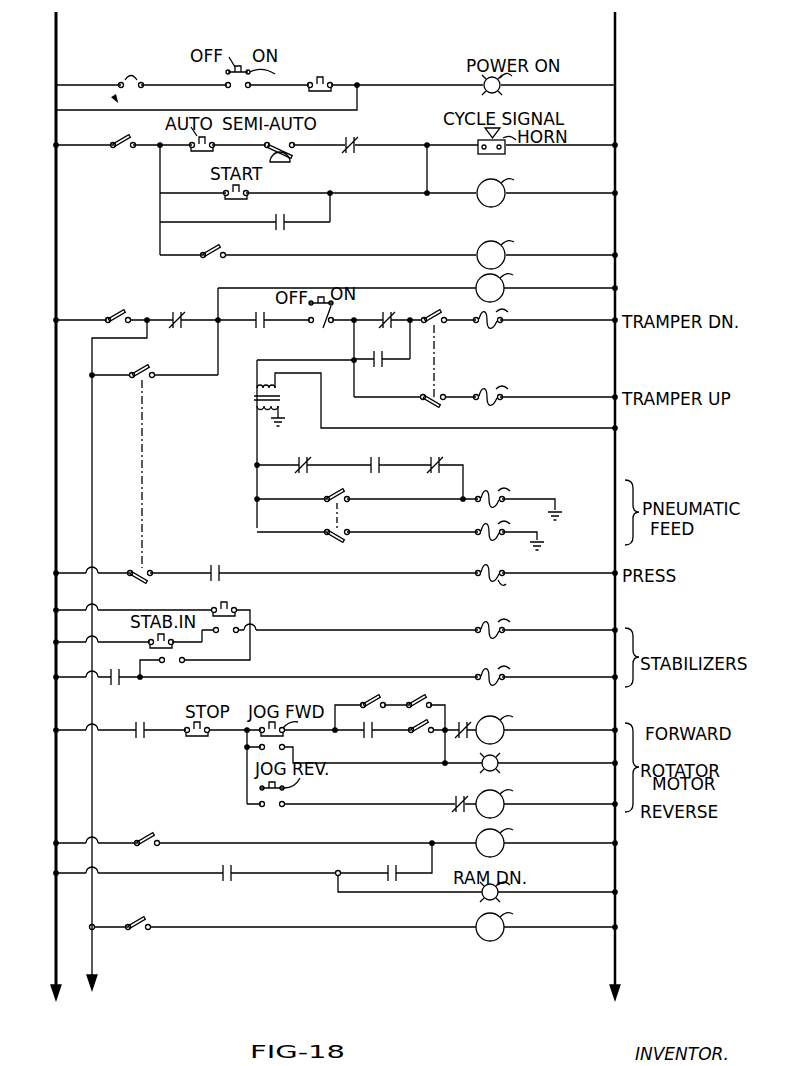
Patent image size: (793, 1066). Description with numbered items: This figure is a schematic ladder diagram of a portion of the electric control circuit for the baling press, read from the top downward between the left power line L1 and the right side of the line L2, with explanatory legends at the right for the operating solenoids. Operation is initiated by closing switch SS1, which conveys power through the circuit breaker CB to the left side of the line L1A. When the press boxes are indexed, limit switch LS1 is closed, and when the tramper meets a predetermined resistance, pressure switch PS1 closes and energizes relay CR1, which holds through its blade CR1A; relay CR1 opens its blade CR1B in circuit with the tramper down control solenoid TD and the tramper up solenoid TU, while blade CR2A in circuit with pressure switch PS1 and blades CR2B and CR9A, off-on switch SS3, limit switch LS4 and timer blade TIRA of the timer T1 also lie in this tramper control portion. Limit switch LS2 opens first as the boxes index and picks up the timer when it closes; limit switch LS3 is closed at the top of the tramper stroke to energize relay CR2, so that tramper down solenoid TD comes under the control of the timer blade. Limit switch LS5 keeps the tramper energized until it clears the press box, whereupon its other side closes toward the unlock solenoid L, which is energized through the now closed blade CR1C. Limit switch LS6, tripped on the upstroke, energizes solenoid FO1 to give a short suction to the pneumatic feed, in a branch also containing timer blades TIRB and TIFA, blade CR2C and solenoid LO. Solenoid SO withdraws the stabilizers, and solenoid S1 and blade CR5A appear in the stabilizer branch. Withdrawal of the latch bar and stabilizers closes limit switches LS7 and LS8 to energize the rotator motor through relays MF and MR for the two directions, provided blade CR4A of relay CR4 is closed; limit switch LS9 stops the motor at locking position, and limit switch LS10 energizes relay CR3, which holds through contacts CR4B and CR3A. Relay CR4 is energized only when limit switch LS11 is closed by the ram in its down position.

The left side of the line L1 is at (52, 500).
The right side of the line L2 is at (613, 500).
The left side of the line L1A is at (56, 116).
The circuit breaker CB is at (130, 72).
The switch SS1 is at (222, 80).
The limit switch LS1 is at (133, 138).
The pressure switch PS1 is at (299, 157).
The blade CR2A is at (373, 133).
The relay CR1 is at (509, 186).
The blade CR1A is at (292, 216).
The limit switch LS3 is at (208, 243).
The relay CR2 is at (513, 249).
The timer T1 is at (506, 285).
The limit switch LS2 is at (112, 306).
The blade CR1B is at (171, 311).
The blade CR9A is at (248, 311).
The switch SS3 is at (317, 326).
The blade CR2B is at (386, 311).
The limit switch LS4 is at (433, 341).
The tramper down control solenoid TD is at (501, 311).
The timer blade TR1A TIRA is at (377, 351).
The tramper up solenoid TU is at (500, 389).
The limit switch LS5 is at (134, 457).
The timer blade TIRB is at (299, 456).
The blade CR2C is at (378, 456).
The timer blade TIFA is at (435, 456).
The limit switch LS6 is at (325, 502).
The solenoid FO1 is at (510, 490).
The solenoid LO is at (499, 524).
The blade CR1C is at (213, 565).
The unlock solenoid L is at (495, 580).
The solenoid S0 SO is at (505, 621).
The blade CR5A is at (126, 662).
The solenoid S1 is at (504, 669).
The blade CR4A is at (146, 722).
The limit switch LS7 is at (364, 695).
The limit switch LS8 is at (411, 695).
The limit switch LS9 is at (417, 719).
The relay MF is at (445, 757).
The relay MR is at (496, 762).
The limit switch LS10 is at (137, 830).
The relay CR3 is at (513, 838).
The contact CR4B is at (238, 858).
The contact CR3A is at (403, 858).
The limit switch LS11 is at (131, 914).
The relay CR4 is at (510, 922).